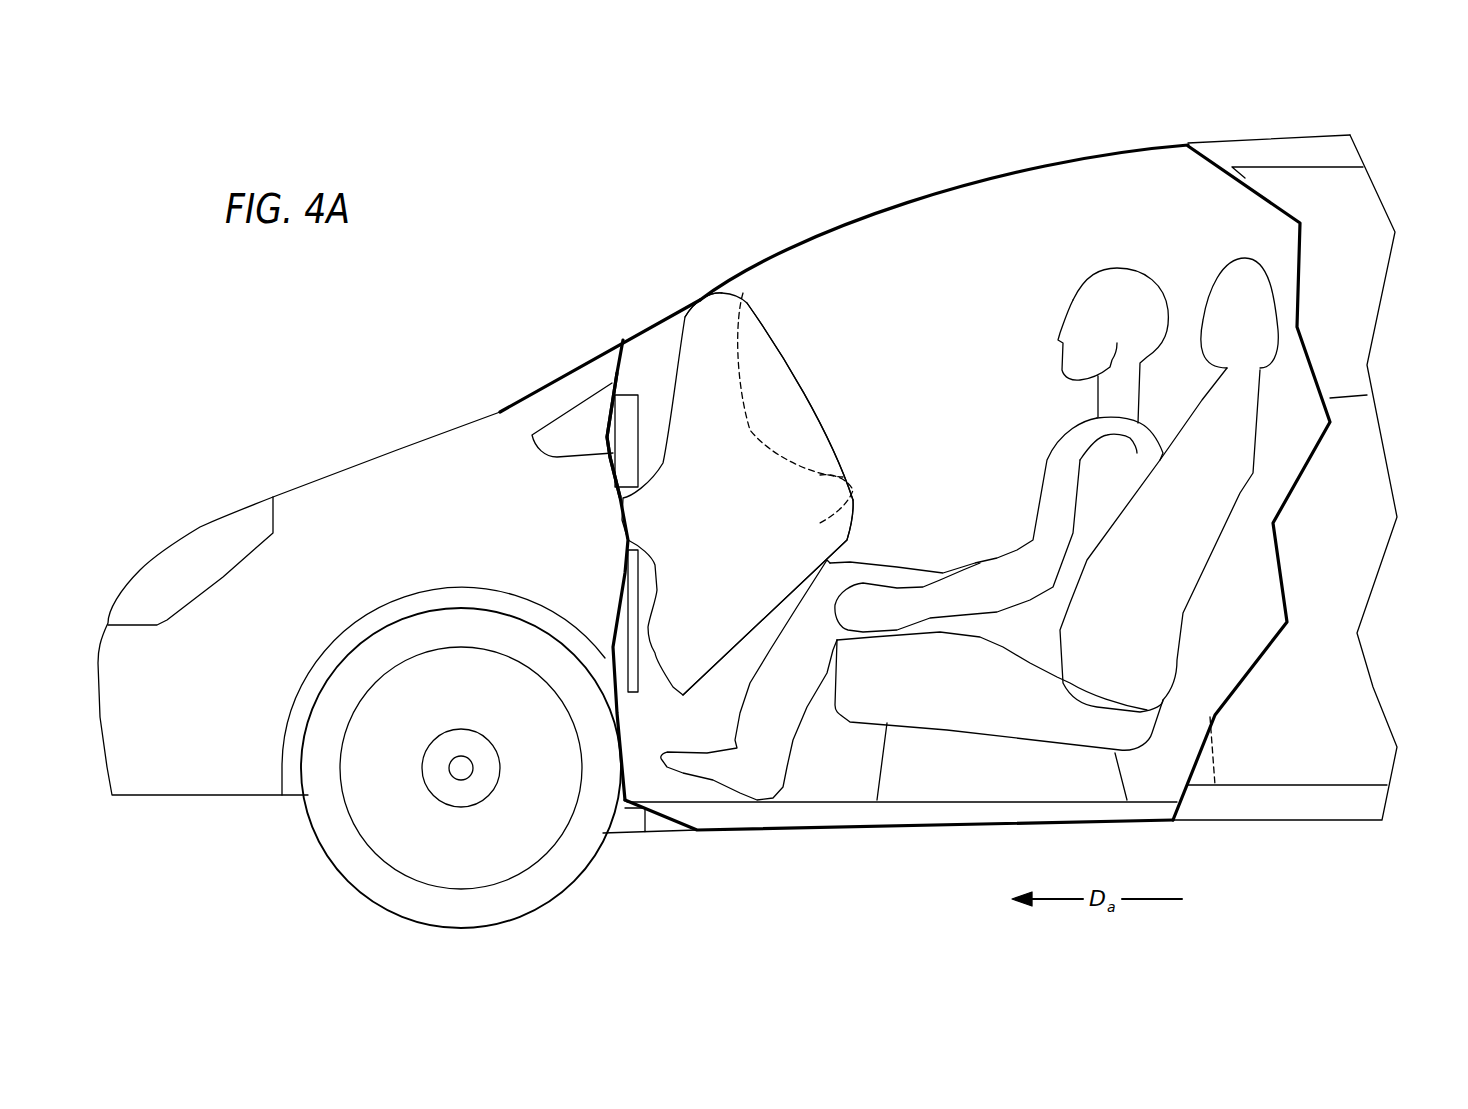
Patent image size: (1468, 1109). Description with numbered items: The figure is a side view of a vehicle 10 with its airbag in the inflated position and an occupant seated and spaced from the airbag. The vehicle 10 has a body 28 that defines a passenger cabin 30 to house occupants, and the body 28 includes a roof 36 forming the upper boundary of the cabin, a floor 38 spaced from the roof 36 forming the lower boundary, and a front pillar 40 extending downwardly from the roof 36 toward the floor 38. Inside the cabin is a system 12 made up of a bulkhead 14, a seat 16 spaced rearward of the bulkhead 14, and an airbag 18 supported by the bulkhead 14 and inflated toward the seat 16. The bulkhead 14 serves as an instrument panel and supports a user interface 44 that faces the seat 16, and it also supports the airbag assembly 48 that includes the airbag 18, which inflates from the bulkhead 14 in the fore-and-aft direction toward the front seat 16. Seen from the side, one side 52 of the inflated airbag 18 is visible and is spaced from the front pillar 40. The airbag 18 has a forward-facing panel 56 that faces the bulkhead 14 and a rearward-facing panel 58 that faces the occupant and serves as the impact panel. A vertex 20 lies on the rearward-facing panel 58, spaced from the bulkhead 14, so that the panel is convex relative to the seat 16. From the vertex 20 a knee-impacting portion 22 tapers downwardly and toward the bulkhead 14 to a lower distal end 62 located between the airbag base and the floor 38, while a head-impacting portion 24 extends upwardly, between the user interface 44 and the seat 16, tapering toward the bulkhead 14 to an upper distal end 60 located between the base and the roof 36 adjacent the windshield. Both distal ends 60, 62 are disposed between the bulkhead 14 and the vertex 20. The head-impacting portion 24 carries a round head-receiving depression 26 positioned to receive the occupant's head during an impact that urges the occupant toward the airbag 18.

The vehicle 10 is at (769, 499).
The system 12 is at (1185, 192).
The bulkhead 14 is at (618, 726).
The seat 16 is at (1190, 607).
The airbag 18 is at (747, 292).
The vertex 20 is at (847, 513).
The knee-impacting portion 22 is at (745, 657).
The head-impacting portion 24 is at (797, 373).
The head-receiving depression 26 is at (750, 430).
The body 28 is at (342, 447).
The passenger cabin 30 is at (1227, 218).
The roof 36 is at (1280, 133).
The floor 38 is at (810, 805).
The front pillar 40 is at (558, 378).
The user interface 44 is at (615, 393).
The airbag assembly 48 is at (612, 523).
The side 52 is at (725, 530).
The forward-facing panel 56 is at (663, 440).
The rearward-facing panel 58 is at (847, 490).
The upper distal end 60 is at (700, 297).
The lower distal end 62 is at (683, 697).